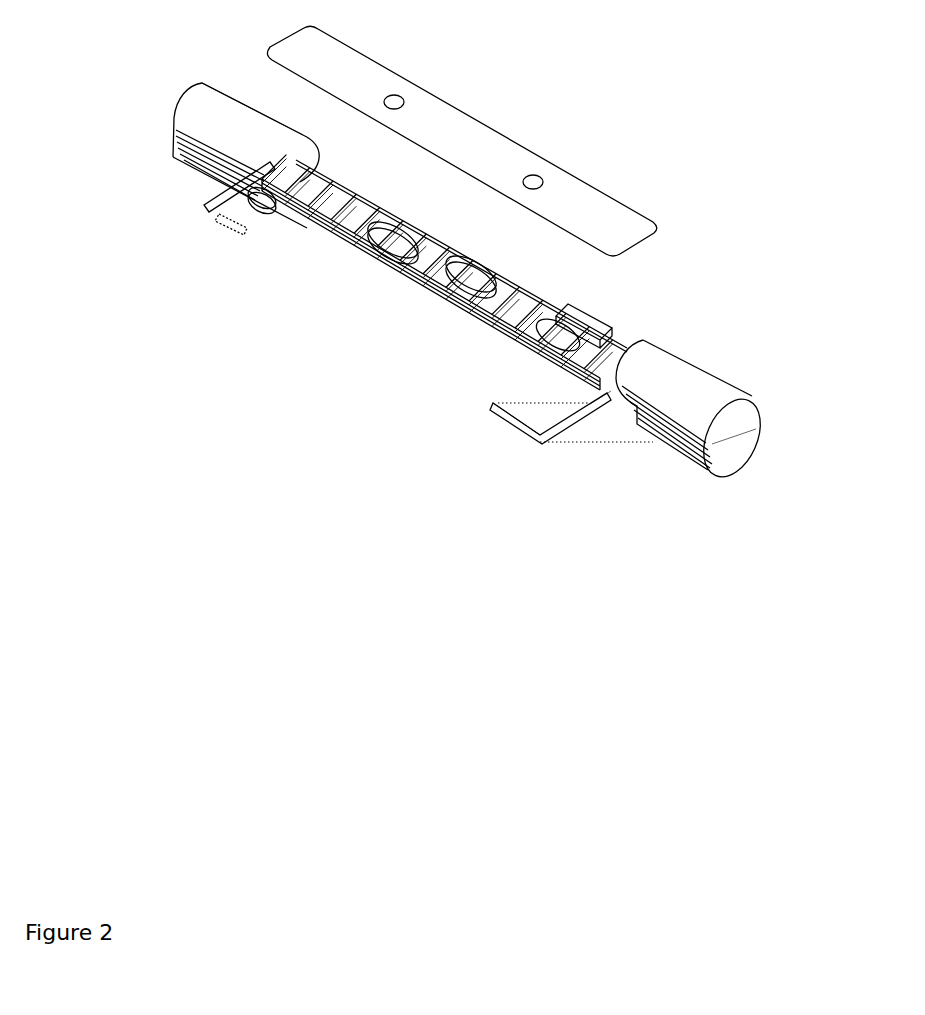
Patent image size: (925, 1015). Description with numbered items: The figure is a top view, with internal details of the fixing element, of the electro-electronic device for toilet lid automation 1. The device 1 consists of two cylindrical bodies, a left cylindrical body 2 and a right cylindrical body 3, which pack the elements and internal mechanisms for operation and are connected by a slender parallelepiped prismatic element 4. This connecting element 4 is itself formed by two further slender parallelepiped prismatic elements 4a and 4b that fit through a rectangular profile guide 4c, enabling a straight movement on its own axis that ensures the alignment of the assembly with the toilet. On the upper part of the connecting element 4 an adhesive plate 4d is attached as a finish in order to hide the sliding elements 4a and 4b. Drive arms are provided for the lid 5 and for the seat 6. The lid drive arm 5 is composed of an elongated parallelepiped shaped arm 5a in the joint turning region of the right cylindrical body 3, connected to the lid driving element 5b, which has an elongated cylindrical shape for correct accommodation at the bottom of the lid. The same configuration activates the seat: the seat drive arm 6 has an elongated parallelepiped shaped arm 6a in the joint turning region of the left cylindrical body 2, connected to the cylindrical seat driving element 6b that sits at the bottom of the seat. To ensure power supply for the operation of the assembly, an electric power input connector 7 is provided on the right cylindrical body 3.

The electro-electronic device for toilet lid automation 1 is at (180, 86).
The left cylindrical body 2 is at (246, 104).
The right cylindrical body 3 is at (716, 372).
The slender parallelepiped prismatic element 4 is at (467, 291).
The sliding prismatic element 4a is at (602, 341).
The sliding prismatic element 4b is at (314, 228).
The rectangular profile guide 4c is at (428, 257).
The adhesive plate 4d is at (612, 193).
The lid drive arm 5 is at (530, 448).
The elongated parallelepiped shaped arm 5a is at (596, 420).
The lid driving element 5b is at (486, 405).
The seat drive arm 6 is at (171, 256).
The elongated parallelepiped shaped arm 6a is at (210, 192).
The seat driving element 6b is at (223, 228).
The electric power input connector 7 is at (752, 415).